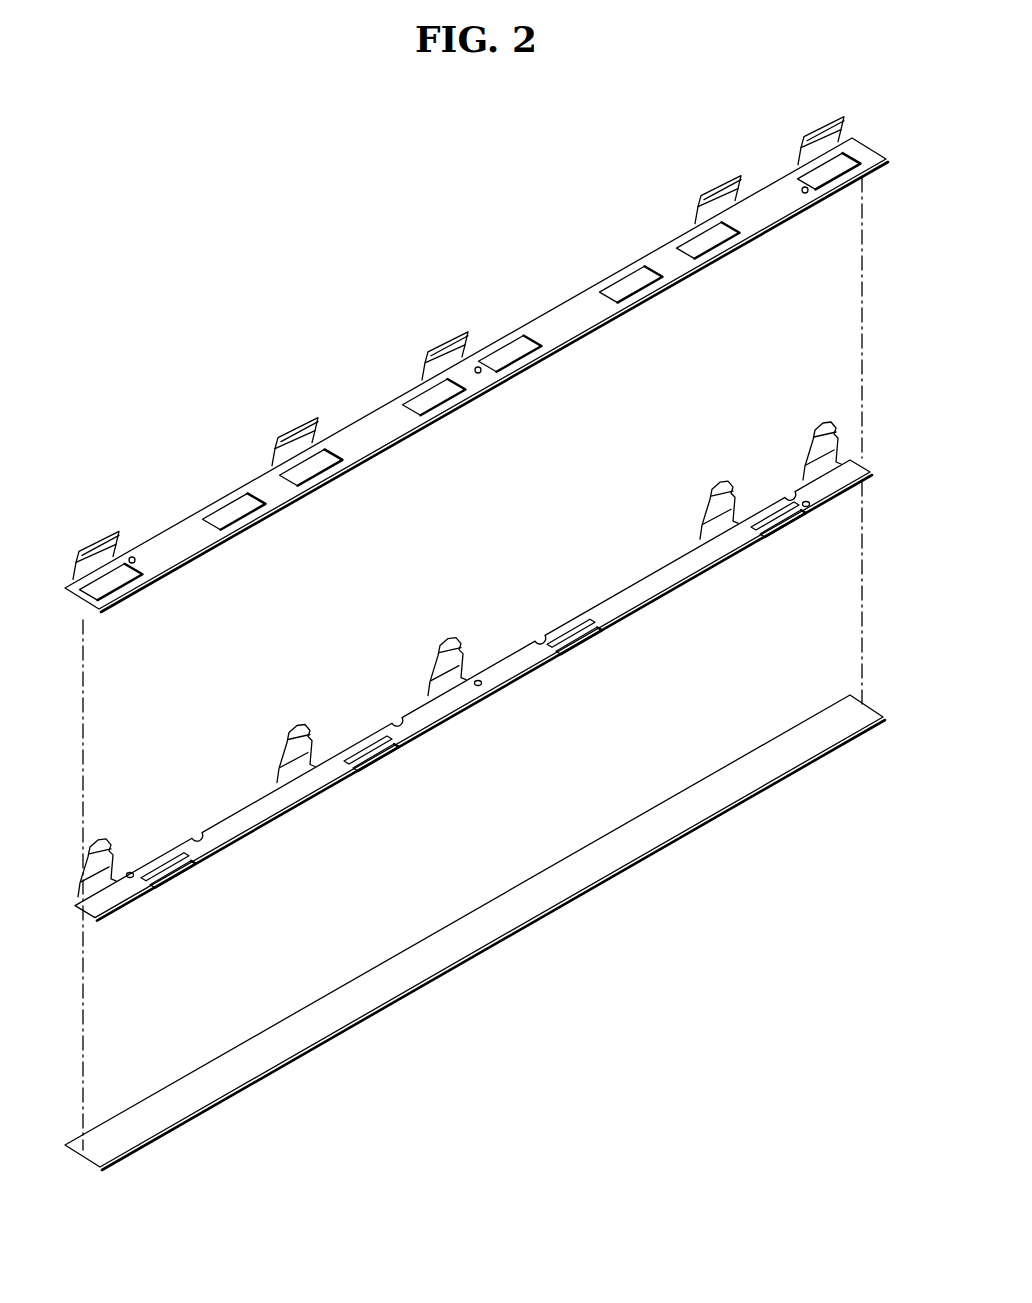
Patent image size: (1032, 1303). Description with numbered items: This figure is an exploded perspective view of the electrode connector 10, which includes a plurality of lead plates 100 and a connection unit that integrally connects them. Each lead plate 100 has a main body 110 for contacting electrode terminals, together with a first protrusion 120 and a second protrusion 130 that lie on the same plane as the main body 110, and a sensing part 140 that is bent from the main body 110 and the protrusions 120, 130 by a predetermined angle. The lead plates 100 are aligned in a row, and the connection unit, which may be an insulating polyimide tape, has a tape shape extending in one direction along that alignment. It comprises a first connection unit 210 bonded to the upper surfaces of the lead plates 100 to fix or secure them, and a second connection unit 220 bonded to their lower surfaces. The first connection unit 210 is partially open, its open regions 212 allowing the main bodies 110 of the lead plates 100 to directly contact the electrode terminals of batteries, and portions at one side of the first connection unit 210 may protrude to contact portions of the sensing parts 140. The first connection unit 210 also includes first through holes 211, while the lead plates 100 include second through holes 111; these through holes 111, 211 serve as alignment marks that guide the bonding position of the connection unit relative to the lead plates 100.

The electrode connector 10 is at (256, 220).
The lead plate 100 is at (473, 670).
The main body 110 is at (100, 906).
The second through hole 111 is at (482, 686).
The first protrusion 120 is at (180, 864).
The second protrusion 130 is at (158, 860).
The sensing part 140 is at (306, 726).
The first connection unit 210 is at (868, 138).
The first through hole 211 is at (480, 374).
The open region 212 is at (420, 408).
The second connection unit 220 is at (768, 804).